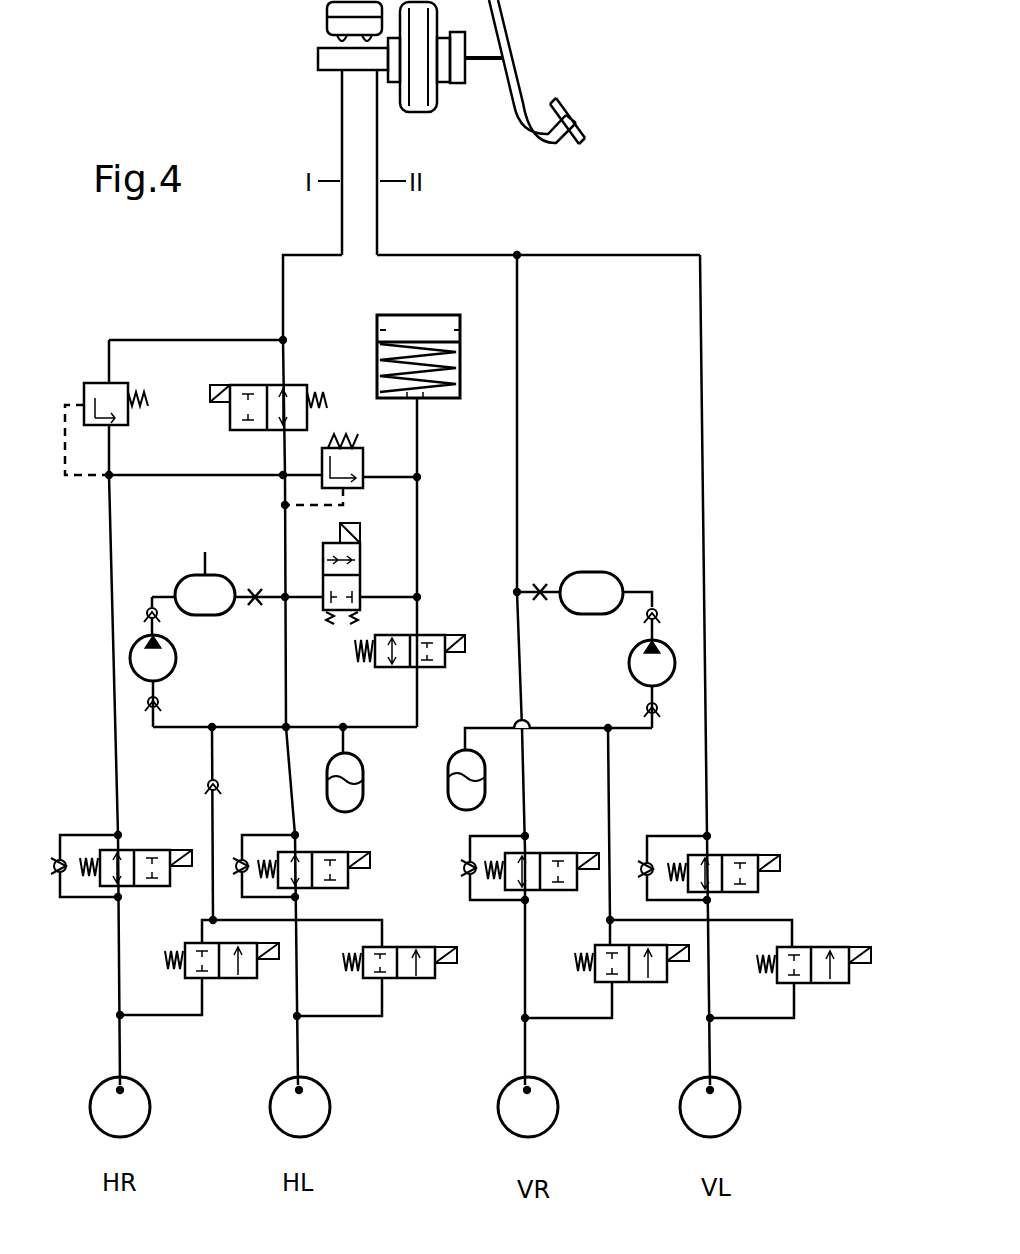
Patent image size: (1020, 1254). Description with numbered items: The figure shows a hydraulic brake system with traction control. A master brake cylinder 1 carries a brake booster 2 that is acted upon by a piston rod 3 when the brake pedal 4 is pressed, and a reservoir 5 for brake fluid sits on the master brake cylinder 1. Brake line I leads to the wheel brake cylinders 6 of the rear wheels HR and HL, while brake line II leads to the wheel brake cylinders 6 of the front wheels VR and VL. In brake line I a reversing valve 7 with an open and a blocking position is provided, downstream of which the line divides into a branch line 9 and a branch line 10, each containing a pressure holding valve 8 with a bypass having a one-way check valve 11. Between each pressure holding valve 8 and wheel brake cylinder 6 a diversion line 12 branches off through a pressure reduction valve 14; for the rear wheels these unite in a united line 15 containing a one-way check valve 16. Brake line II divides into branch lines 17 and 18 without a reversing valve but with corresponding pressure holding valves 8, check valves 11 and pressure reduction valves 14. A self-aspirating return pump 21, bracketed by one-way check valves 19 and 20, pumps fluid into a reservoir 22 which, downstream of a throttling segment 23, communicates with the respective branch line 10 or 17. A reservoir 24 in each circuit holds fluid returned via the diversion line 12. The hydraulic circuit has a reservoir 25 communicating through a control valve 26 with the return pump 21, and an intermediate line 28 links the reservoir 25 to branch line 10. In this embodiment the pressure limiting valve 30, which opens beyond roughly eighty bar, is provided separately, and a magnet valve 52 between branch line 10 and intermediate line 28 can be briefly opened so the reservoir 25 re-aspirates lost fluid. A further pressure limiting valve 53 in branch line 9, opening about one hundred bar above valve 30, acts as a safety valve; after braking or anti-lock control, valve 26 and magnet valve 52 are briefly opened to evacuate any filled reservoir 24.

The master brake cylinder 1 is at (330, 62).
The brake booster 2 is at (418, 107).
The piston rod 3 is at (480, 66).
The brake pedal 4 is at (521, 100).
The reservoir 5 is at (338, 22).
The wheel brake cylinder 6 is at (125, 1088).
The reversing valve 7 is at (290, 392).
The pressure holding valve 8 is at (124, 848).
The branch line 9 is at (109, 556).
The branch line 10 is at (285, 672).
The one-way check valve 11 is at (58, 858).
The diversion line 12 is at (175, 1018).
The pressure reduction valve 14 is at (218, 980).
The united line 15 is at (216, 815).
The one-way check valve 16 is at (222, 780).
The branch line 17 is at (518, 495).
The branch line 18 is at (704, 452).
The one-way check valve 19 is at (148, 706).
The one-way check valve 20 is at (150, 607).
The return pump 21 is at (172, 662).
The reservoir 22 is at (620, 552).
The throttling segment 23 is at (255, 590).
The reservoir 24 is at (365, 783).
The reservoir 25 is at (460, 362).
The control valve 26 is at (426, 634).
The intermediate line 28 is at (418, 541).
The pressure limiting valve 30 is at (355, 486).
The magnet valve 52 is at (361, 566).
The pressure limiting valve 53 is at (112, 393).